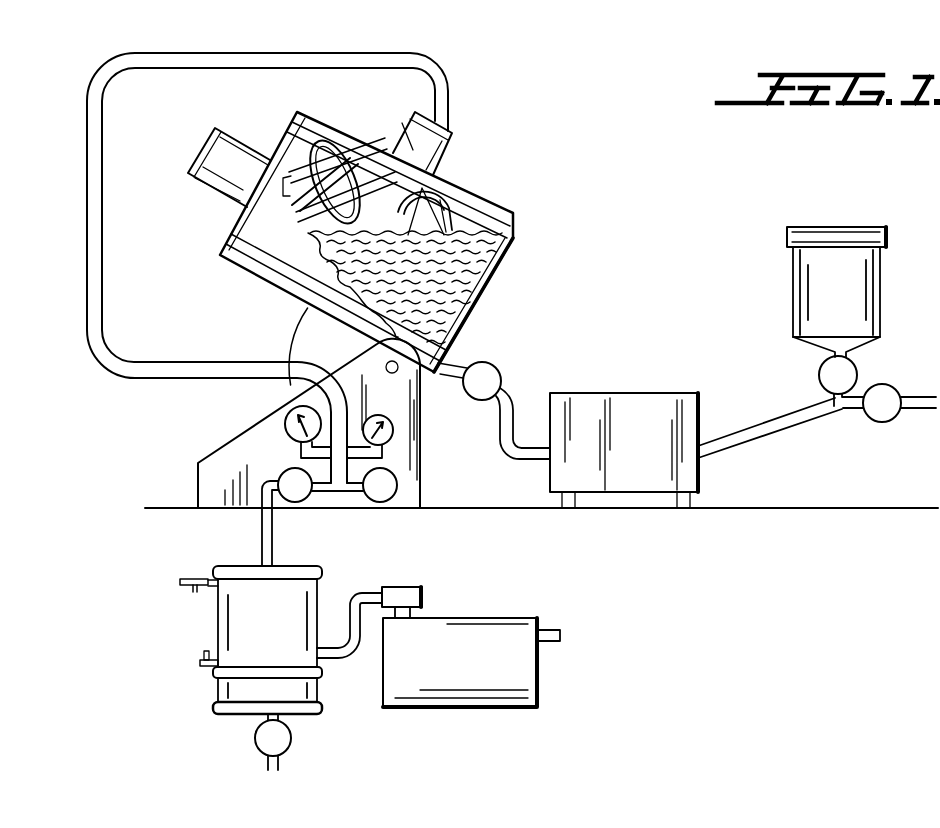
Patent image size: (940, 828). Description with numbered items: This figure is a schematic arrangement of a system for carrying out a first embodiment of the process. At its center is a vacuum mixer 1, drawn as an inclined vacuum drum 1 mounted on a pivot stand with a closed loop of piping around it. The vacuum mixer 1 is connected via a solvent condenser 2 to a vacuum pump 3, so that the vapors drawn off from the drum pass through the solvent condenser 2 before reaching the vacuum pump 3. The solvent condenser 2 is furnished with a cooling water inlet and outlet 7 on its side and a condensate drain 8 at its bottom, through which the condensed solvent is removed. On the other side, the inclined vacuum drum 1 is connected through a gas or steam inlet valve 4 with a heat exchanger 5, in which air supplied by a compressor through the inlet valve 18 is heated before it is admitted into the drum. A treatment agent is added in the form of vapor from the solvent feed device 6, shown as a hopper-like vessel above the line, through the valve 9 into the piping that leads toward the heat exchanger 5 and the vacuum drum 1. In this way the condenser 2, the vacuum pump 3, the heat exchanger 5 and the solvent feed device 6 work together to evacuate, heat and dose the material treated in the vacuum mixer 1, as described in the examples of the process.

The vacuum mixer 1 is at (485, 177).
The solvent condenser 2 is at (287, 566).
The vacuum pump 3 is at (502, 586).
The gas or steam inlet valve 4 is at (504, 366).
The heat exchanger 5 is at (633, 393).
The solvent feed device 6 is at (852, 205).
The cooling water inlet and outlet 7 is at (204, 651).
The condensate drain 8 is at (292, 738).
The valve 9 is at (818, 378).
The inlet valve 18 is at (882, 422).